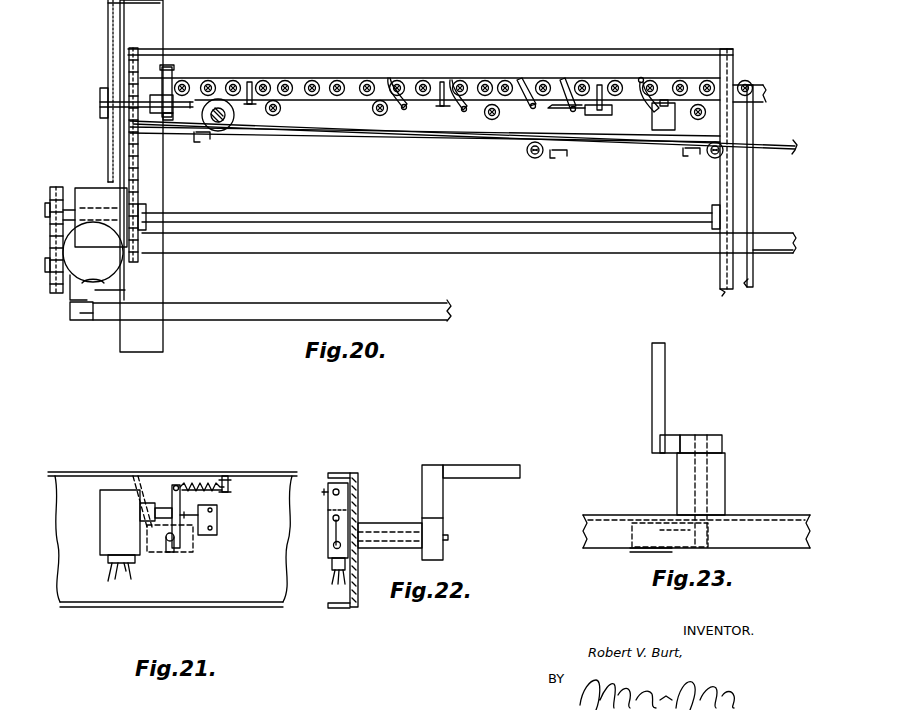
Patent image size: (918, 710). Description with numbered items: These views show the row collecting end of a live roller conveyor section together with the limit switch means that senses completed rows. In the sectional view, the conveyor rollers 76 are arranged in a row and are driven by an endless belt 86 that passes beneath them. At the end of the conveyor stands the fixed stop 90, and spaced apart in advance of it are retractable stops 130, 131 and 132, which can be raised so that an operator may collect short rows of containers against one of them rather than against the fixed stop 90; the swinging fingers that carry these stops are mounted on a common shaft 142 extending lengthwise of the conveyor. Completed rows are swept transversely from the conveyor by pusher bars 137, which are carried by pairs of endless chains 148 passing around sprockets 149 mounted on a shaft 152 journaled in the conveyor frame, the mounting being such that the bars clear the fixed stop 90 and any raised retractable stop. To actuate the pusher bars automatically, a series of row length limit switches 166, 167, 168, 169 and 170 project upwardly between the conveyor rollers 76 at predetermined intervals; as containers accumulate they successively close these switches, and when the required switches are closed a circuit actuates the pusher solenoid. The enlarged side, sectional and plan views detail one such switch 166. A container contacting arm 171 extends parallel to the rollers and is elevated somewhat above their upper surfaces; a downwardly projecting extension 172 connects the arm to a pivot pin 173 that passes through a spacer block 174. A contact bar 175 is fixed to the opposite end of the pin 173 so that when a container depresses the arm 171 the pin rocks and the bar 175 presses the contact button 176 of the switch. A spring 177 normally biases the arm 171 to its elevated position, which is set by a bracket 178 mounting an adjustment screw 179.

In FIG. 20, the rollers 76 is at (344, 82).
In FIG. 20, the endless belt 86 is at (392, 148).
In FIG. 20, the fixed stop 90 is at (178, 68).
In FIG. 20, the retractable stop 130 is at (252, 80).
In FIG. 20, the retractable stop 131 is at (442, 82).
In FIG. 20, the retractable stop 132 is at (599, 84).
In FIG. 20, the pusher bars 137 is at (228, 50).
In FIG. 20, the common shaft 142 is at (192, 110).
In FIG. 20, the endless chains 148 is at (732, 90).
In FIG. 20, the sprockets 149 is at (146, 200).
In FIG. 20, the shaft 152 is at (426, 213).
In FIG. 20, the row length limit switch 166 is at (388, 78).
In FIG. 21, the row length limit switch 166 is at (100, 520).
In FIG. 20, the row length limit switch 167 is at (452, 82).
In FIG. 20, the row length limit switch 168 is at (519, 80).
In FIG. 20, the row length limit switch 169 is at (562, 80).
In FIG. 20, the row length limit switch 170 is at (645, 80).
In FIG. 21, the container contacting arm 171 is at (137, 472).
In FIG. 22, the container contacting arm 171 is at (480, 466).
In FIG. 23, the container contacting arm 171 is at (665, 386).
In FIG. 22, the extension 172 is at (446, 503).
In FIG. 23, the extension 172 is at (672, 435).
In FIG. 22, the pivot pin 173 is at (450, 538).
In FIG. 23, the pivot pin 173 is at (698, 435).
In FIG. 22, the spacer block 174 is at (372, 524).
In FIG. 23, the spacer block 174 is at (722, 493).
In FIG. 21, the contact bar 175 is at (190, 497).
In FIG. 22, the contact bar 175 is at (328, 530).
In FIG. 23, the contact bar 175 is at (710, 542).
In FIG. 21, the contact button 176 is at (172, 487).
In FIG. 22, the contact button 176 is at (350, 510).
In FIG. 21, the spring 177 is at (206, 486).
In FIG. 21, the bracket 178 is at (200, 540).
In FIG. 21, the adjustment screw 179 is at (220, 517).